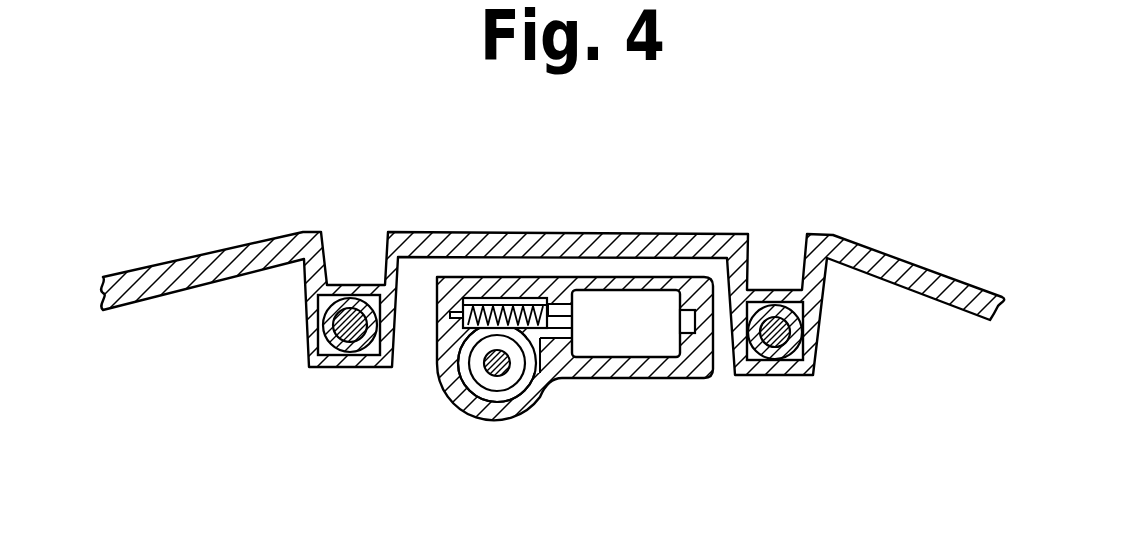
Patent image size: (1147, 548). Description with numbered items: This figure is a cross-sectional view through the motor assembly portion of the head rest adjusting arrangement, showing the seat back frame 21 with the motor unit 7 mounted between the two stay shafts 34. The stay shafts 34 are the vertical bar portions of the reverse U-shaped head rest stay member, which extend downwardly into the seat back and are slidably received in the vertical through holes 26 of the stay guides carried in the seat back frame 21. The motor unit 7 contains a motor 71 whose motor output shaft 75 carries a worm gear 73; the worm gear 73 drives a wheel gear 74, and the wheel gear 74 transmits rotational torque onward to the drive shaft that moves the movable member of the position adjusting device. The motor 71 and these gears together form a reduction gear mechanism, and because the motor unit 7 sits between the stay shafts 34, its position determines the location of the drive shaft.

The motor unit 7 is at (593, 370).
The seat back frame 21 is at (547, 240).
The through hole 26 is at (330, 353).
The stay shaft 34 is at (358, 332).
The motor 71 is at (662, 303).
The worm gear 73 is at (497, 308).
The wheel gear 74 is at (490, 382).
The motor output shaft 75 is at (560, 303).